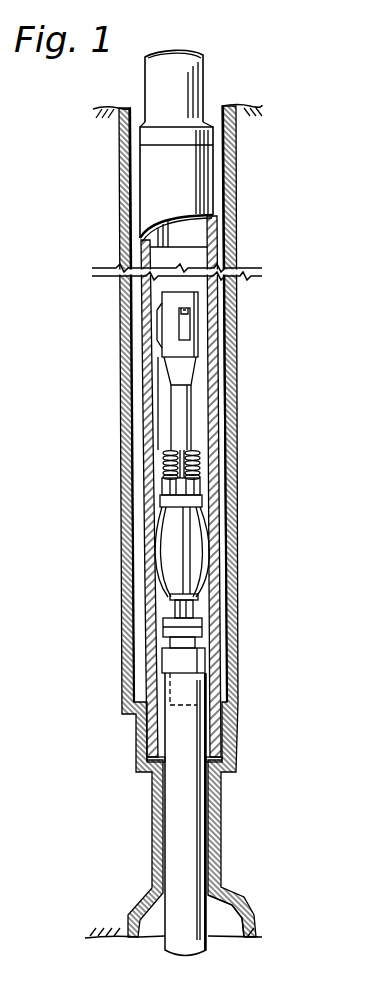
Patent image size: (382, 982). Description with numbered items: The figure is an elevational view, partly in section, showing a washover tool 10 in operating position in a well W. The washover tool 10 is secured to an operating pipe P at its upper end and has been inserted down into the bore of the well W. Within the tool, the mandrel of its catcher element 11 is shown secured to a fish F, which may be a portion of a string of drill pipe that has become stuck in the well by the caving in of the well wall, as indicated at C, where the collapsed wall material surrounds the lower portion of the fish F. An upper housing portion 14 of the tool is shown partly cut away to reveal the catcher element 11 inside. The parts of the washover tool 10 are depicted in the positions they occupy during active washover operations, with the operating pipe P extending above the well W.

The operating pipe P is at (230, 90).
The housing 14 is at (220, 216).
The well W is at (232, 334).
The washover tool 10 is at (226, 397).
The catcher element 11 is at (200, 432).
The fish F is at (198, 806).
The caving in of the well wall C is at (212, 855).